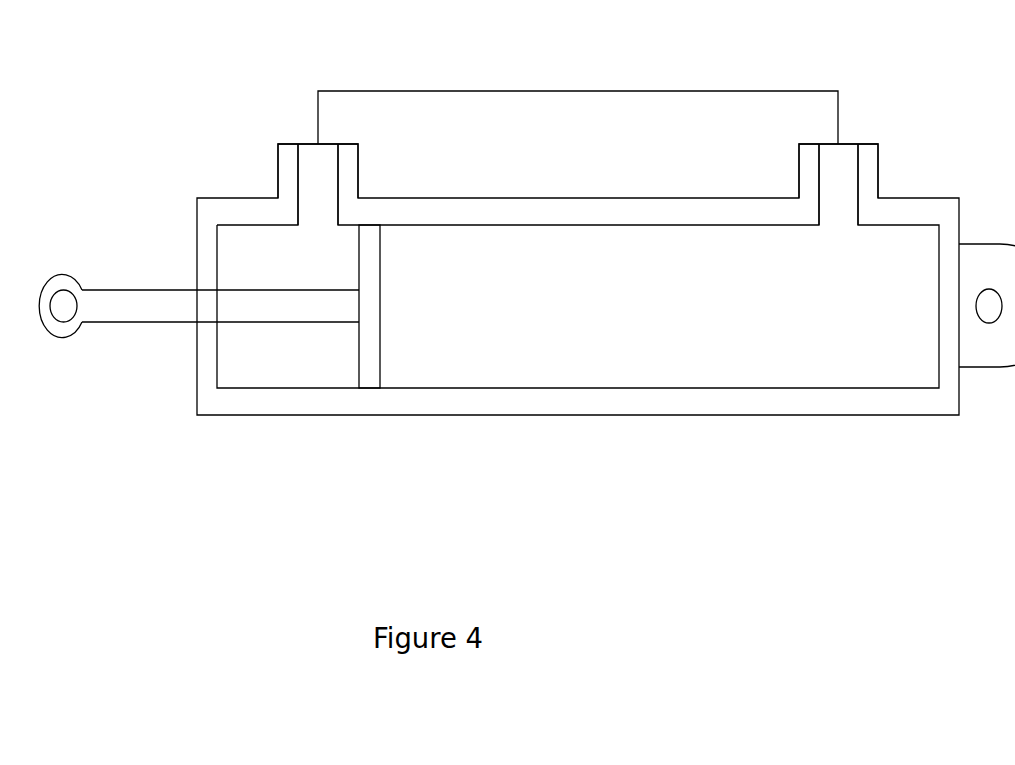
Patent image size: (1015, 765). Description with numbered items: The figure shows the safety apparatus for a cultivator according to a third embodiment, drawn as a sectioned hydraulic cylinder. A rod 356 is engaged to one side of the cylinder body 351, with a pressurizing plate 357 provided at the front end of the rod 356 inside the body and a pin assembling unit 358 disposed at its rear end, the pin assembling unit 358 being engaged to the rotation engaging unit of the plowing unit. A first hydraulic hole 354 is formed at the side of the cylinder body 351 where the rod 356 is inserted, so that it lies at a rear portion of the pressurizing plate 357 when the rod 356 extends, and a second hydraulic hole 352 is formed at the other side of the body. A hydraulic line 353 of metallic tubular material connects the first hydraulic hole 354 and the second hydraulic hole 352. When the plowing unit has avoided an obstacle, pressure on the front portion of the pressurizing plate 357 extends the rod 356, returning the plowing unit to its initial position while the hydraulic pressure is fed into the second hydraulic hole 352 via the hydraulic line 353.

The cylinder body 351 is at (580, 198).
The second hydraulic hole 352 is at (840, 176).
The hydraulic line 353 is at (731, 91).
The first hydraulic hole 354 is at (318, 175).
The rod 356 is at (138, 290).
The pressurizing plate 357 is at (372, 360).
The pin assembling unit 358 is at (64, 298).